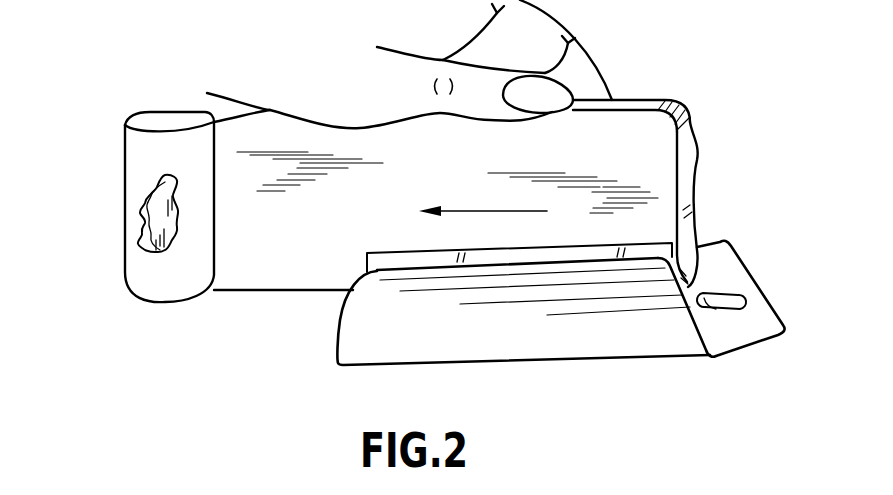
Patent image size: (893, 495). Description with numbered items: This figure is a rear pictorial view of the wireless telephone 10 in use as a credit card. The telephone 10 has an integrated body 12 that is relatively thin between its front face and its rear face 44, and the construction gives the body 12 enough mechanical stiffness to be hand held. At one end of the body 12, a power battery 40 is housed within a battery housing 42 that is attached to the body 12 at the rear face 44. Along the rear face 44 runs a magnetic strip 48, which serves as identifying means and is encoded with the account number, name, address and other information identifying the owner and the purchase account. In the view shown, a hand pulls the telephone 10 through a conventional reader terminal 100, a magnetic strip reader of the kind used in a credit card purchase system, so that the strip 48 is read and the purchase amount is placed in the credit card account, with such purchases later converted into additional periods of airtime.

The wireless telephone 10 is at (694, 94).
The integrated body 12 is at (657, 178).
The power battery 40 is at (153, 213).
The battery housing 42 is at (150, 286).
The rear face 44 is at (250, 277).
The magnetic strip 48 is at (402, 263).
The reader terminal 100 is at (362, 345).